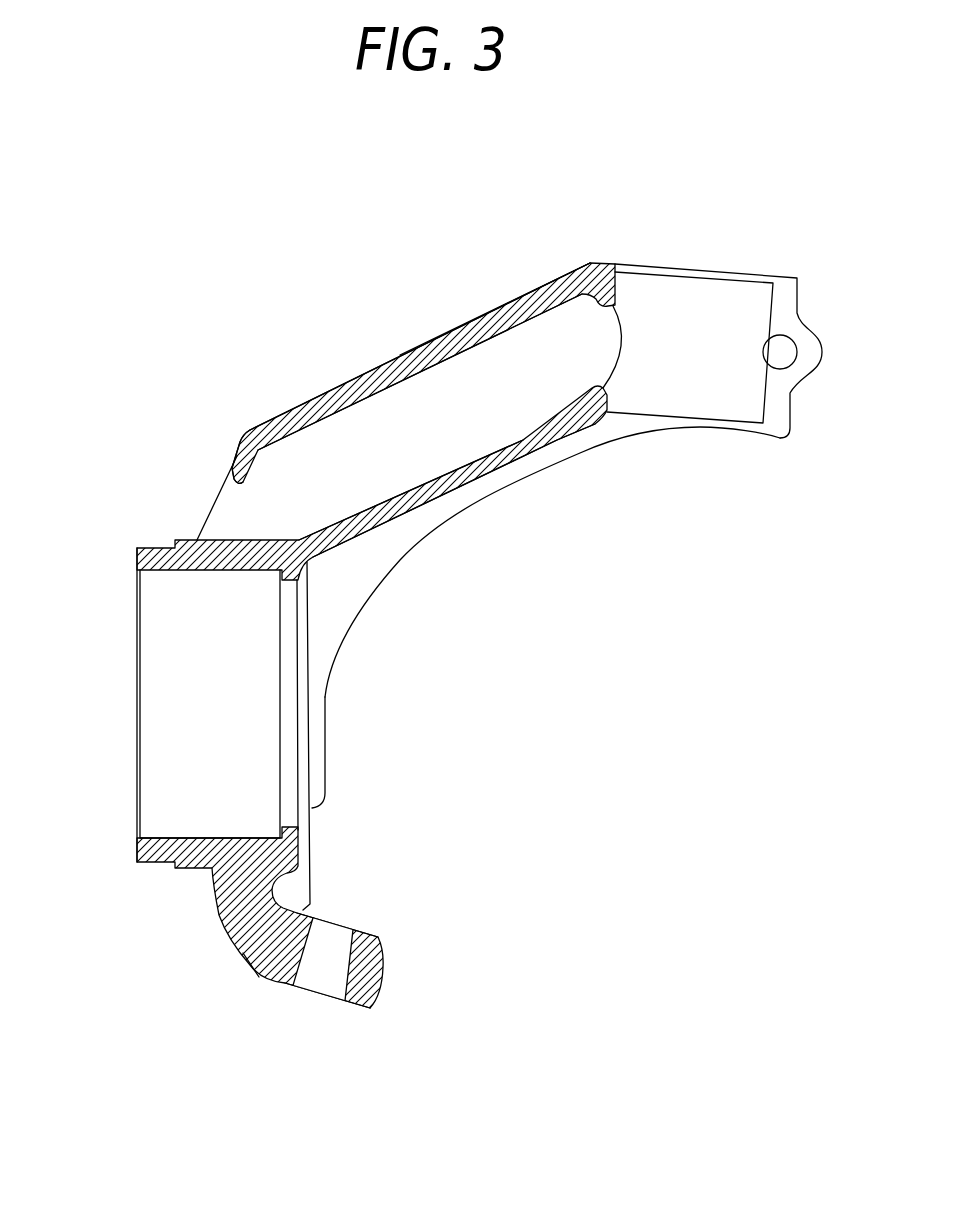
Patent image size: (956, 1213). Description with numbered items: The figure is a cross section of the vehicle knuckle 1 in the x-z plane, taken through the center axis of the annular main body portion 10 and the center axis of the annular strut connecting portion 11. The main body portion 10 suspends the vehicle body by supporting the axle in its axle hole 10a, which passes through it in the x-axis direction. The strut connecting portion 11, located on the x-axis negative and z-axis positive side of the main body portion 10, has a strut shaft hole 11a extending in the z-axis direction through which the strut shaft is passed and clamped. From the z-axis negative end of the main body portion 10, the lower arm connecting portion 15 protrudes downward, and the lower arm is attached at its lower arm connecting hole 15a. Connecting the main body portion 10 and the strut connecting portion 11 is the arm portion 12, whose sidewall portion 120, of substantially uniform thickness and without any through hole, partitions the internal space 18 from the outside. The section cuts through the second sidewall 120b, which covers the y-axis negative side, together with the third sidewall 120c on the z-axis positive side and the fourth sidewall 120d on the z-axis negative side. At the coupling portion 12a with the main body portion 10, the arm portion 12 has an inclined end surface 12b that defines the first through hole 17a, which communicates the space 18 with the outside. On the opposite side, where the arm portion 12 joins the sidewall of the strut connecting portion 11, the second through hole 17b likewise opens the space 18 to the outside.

The vehicle knuckle 1 is at (250, 277).
The main body portion 10 is at (125, 831).
The axle hole 10a is at (180, 690).
The strut connecting portion 11 is at (737, 260).
The strut shaft hole 11a is at (692, 322).
The arm portion 12 is at (392, 350).
The coupling portion 12a is at (237, 447).
The end surface 12b is at (233, 468).
The sidewall portion 120 is at (452, 327).
The second sidewall 120b is at (523, 353).
The third sidewall 120c is at (348, 390).
The fourth sidewall 120d is at (475, 475).
The lower arm connecting portion 15 is at (390, 967).
The lower arm connecting hole 15a is at (320, 972).
The first through hole 17a is at (240, 512).
The second through hole 17b is at (607, 353).
The space 18 is at (333, 470).